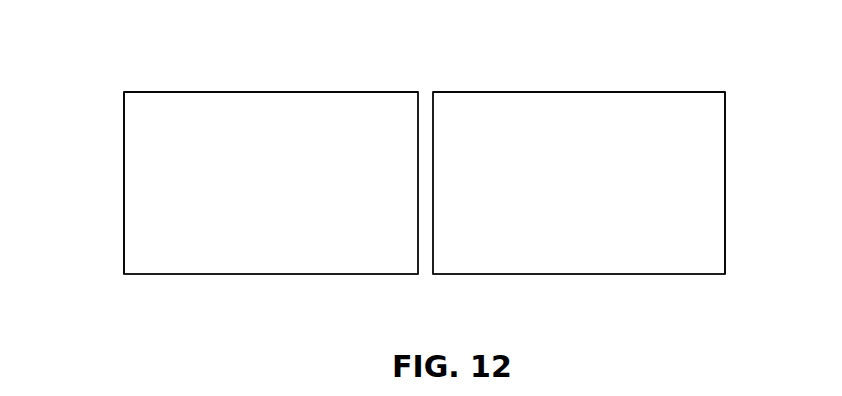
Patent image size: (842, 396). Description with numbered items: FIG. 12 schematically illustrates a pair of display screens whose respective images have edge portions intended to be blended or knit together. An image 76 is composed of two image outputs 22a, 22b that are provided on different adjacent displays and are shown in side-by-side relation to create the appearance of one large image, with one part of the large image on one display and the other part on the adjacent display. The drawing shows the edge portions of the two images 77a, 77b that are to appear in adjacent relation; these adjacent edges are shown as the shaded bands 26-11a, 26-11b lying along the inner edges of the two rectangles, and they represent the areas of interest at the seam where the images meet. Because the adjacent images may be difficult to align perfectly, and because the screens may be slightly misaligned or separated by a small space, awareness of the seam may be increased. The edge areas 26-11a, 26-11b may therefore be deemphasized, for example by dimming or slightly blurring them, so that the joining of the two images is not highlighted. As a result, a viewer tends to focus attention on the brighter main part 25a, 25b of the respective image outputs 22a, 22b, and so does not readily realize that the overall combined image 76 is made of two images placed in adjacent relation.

The image 76 is at (88, 112).
The image output 22a is at (158, 181).
The main part 25a is at (146, 231).
The image 77a is at (352, 157).
The first edge region 26-11a is at (378, 123).
The second edge region 26-11b is at (452, 117).
The image 77b is at (485, 168).
The image output 22b is at (646, 111).
The main part 25b is at (672, 190).